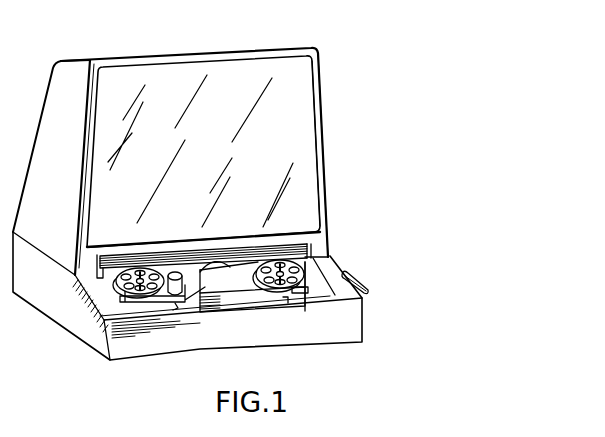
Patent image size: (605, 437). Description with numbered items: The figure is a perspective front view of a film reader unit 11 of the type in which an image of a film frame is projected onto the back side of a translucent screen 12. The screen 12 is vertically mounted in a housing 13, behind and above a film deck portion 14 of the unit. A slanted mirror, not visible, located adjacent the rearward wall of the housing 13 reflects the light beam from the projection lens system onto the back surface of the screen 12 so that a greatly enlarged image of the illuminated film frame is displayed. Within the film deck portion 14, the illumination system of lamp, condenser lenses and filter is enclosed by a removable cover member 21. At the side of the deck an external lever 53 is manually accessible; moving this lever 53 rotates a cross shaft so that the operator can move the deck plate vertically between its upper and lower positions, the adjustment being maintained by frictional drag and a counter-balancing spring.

The film reader unit 11 is at (324, 132).
The translucent screen 12 is at (296, 87).
The housing 13 is at (324, 190).
The film deck portion 14 is at (330, 267).
The removable cover member 21 is at (225, 300).
The external lever 53 is at (357, 283).